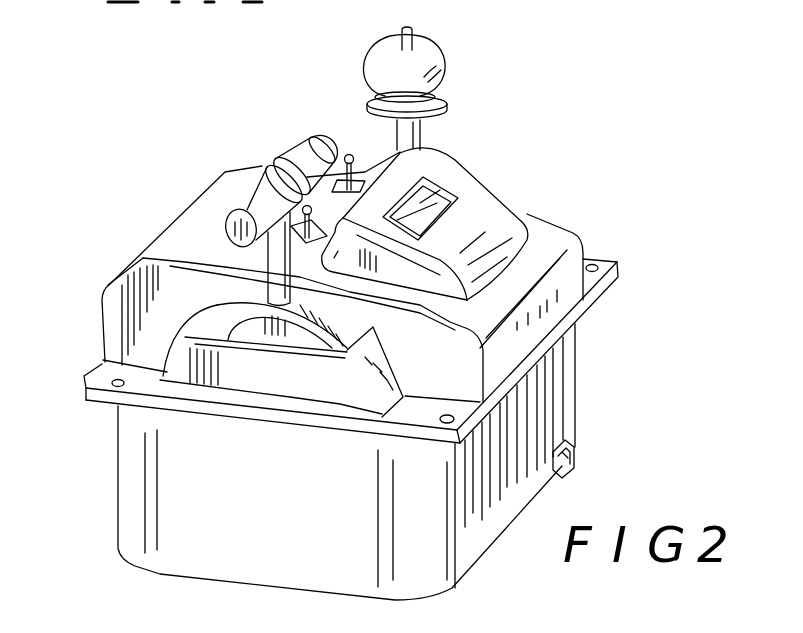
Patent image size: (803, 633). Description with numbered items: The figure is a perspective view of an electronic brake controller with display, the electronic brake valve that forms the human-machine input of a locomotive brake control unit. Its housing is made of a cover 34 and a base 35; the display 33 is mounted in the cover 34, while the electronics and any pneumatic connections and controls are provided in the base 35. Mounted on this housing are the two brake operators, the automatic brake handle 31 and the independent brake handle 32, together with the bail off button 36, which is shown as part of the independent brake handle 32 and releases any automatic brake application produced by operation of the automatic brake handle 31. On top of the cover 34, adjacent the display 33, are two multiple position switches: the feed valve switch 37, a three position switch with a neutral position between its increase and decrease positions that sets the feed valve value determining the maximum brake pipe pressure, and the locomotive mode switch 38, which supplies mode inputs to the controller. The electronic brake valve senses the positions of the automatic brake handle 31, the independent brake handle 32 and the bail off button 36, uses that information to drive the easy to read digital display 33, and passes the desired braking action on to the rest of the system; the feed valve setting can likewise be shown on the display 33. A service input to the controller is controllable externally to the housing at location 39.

The automatic brake handle 31 is at (310, 147).
The independent brake handle 32 is at (428, 53).
The display 33 is at (441, 222).
The cover 34 is at (418, 420).
The base 35 is at (122, 475).
The bail off button 36 is at (411, 28).
The feed valve switch 37 is at (303, 206).
The locomotive mode switch 38 is at (350, 154).
The service input location 39 is at (572, 443).